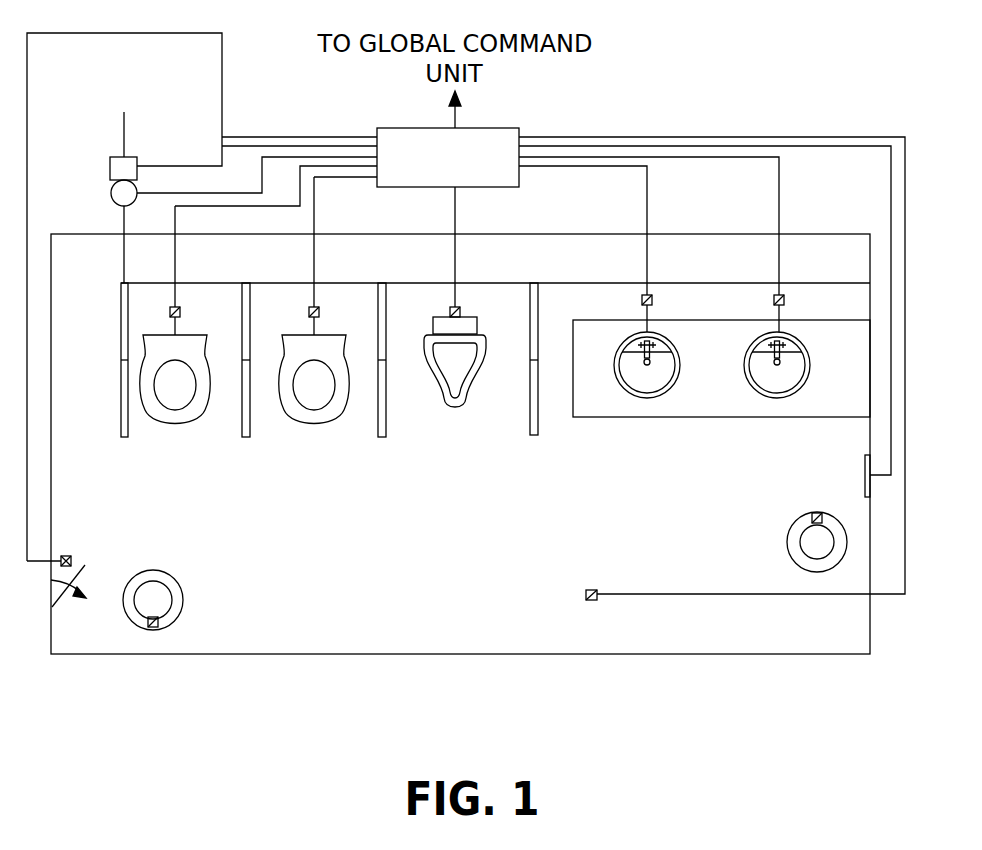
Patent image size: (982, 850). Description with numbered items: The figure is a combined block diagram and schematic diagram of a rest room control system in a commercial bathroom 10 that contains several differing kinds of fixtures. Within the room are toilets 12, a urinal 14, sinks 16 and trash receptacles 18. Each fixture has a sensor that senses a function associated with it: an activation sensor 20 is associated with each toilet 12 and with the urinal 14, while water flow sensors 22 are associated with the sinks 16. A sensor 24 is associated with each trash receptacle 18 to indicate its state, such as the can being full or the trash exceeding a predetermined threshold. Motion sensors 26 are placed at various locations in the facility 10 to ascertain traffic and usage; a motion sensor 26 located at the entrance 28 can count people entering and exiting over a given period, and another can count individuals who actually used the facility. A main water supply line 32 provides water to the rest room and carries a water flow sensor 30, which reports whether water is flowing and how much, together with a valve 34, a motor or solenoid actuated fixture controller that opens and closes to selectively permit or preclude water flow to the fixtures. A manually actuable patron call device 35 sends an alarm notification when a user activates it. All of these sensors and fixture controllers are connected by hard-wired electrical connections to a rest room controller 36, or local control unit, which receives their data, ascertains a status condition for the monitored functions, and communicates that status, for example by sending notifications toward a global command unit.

The commercial bathroom 10 is at (750, 70).
The toilet 12 is at (190, 425).
The urinal 14 is at (460, 407).
The sink 16 is at (682, 437).
The trash receptacle 18 is at (790, 532).
The activation sensor 20 is at (181, 306).
The water flow sensor 22 is at (652, 297).
The sensor 24 is at (822, 513).
The motion sensor 26 is at (67, 556).
The entrance 28 is at (103, 566).
The water flow sensor 30 is at (134, 157).
The main water supply line 32 is at (124, 131).
The valve 34 is at (117, 205).
The patron call device 35 is at (865, 460).
The rest room controller 36 is at (497, 128).